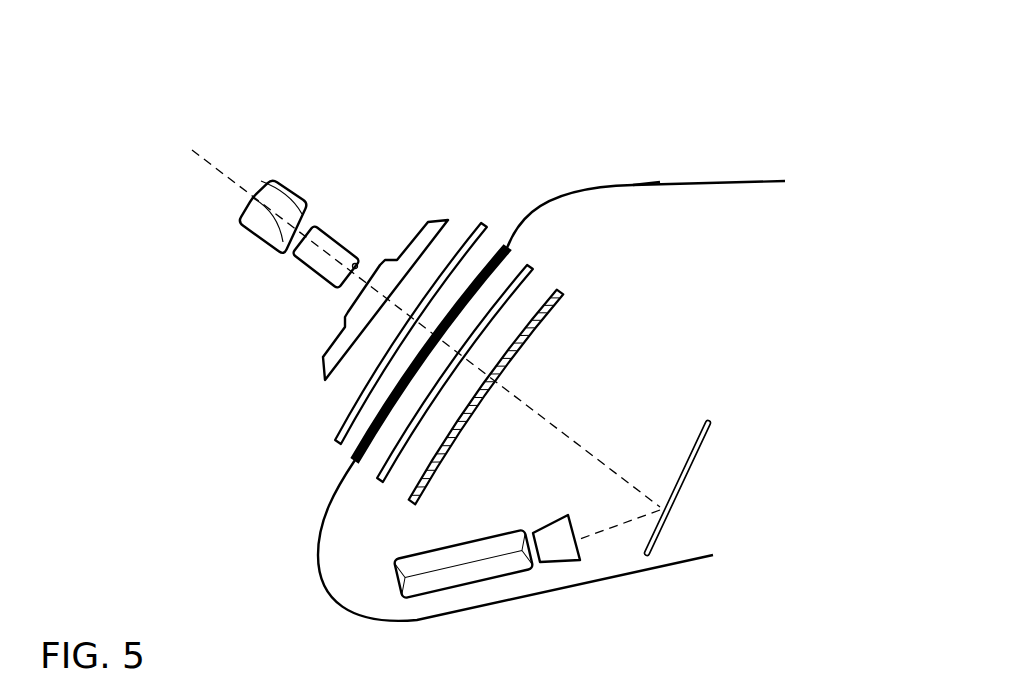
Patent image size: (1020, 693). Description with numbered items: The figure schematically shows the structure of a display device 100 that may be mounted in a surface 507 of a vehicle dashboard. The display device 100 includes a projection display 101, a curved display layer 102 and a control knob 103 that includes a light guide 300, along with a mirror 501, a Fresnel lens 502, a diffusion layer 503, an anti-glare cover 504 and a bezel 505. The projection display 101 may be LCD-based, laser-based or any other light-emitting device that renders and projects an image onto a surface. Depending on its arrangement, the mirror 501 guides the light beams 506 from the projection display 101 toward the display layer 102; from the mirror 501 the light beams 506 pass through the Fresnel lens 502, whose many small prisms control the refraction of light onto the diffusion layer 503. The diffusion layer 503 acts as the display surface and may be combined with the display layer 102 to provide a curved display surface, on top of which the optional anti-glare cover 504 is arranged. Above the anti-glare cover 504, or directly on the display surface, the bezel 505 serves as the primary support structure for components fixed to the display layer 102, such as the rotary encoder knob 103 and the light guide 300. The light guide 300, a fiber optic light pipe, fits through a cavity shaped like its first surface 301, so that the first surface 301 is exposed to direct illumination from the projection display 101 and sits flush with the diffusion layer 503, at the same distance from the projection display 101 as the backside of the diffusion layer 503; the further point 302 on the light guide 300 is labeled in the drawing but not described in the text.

The display device 100 is at (496, 121).
The projection display 101 is at (485, 582).
The curved display layer 102 is at (531, 251).
The control knob 103 is at (252, 233).
The light guide 300 is at (312, 277).
The first surface 301 is at (353, 273).
The lens 302 is at (303, 237).
The mirror 501 is at (708, 428).
The Fresnel lens 502 is at (562, 306).
The diffusion layer 503 is at (543, 278).
The anti-glare cover 504 is at (323, 455).
The bezel 505 is at (433, 227).
The light beams 506 is at (222, 173).
The surface 507 is at (636, 183).